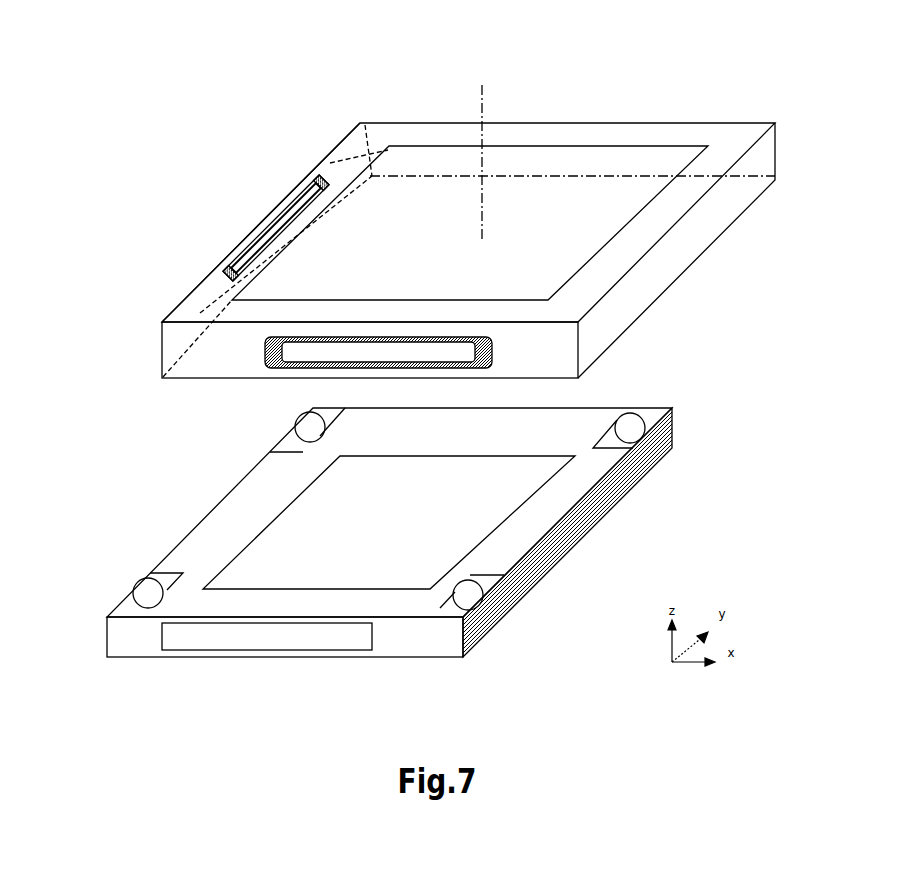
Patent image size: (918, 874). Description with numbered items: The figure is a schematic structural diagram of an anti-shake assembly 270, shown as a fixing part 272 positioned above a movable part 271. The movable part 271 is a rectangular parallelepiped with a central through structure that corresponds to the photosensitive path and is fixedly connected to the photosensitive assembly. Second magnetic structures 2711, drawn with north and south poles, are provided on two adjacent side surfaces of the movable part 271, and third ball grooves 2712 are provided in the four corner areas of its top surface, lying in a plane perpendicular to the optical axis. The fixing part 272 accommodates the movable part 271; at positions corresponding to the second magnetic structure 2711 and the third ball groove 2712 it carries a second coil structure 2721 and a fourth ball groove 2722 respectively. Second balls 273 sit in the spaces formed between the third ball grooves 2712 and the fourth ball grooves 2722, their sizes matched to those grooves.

The anti-shake assembly 270 is at (480, 32).
The movable part 271 is at (370, 558).
The second magnetic structure 2711 is at (277, 642).
The third ball groove 2712 is at (470, 613).
The fixing part 272 is at (457, 231).
The second coil structure 2721 is at (300, 183).
The fourth ball groove 2722 is at (192, 300).
The second ball 273 is at (145, 592).